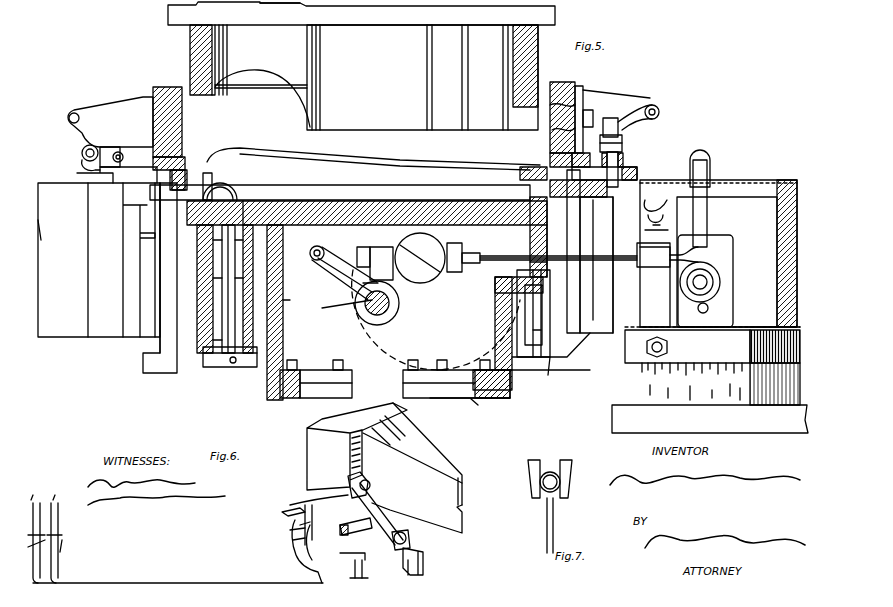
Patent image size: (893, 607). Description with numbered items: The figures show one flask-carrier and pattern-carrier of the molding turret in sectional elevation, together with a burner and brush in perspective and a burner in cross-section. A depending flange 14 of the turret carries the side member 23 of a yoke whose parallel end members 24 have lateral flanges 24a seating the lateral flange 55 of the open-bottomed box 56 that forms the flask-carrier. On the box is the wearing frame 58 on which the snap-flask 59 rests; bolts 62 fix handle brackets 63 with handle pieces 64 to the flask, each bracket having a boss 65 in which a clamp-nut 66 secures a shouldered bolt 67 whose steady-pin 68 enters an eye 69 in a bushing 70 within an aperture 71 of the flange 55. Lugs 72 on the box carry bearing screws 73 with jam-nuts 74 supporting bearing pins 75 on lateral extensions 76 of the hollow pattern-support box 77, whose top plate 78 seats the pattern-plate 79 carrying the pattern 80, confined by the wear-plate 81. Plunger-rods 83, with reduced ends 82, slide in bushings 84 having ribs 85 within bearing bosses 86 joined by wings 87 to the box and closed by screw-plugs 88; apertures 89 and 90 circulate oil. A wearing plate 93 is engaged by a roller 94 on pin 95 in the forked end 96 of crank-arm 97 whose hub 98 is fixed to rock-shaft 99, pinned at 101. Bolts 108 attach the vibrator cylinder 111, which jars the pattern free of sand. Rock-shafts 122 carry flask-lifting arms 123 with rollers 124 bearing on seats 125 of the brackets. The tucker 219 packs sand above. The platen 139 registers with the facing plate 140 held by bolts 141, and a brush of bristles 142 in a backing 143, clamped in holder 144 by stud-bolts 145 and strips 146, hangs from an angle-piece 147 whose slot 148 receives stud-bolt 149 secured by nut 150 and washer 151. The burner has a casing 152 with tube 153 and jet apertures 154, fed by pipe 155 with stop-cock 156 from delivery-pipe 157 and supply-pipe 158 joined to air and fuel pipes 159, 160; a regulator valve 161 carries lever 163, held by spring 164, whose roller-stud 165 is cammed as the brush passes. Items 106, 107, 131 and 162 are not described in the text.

In FIG. 6, the depending flange 14 is at (360, 413).
In FIG. 6, the side member 23 is at (405, 410).
In FIG. 5, the yoke end member 24 is at (135, 303).
In FIG. 6, the yoke end member 24 is at (438, 466).
In FIG. 5, the lateral flange 24a is at (770, 183).
In FIG. 5, the lateral flange 55 is at (90, 178).
In FIG. 5, the flask-carrier box 56 is at (165, 262).
In FIG. 5, the wearing frame 58 is at (185, 150).
In FIG. 5, the snap-flask 59 is at (182, 120).
In FIG. 5, the bolt 62 is at (585, 110).
In FIG. 5, the handle bracket 63 is at (110, 106).
In FIG. 5, the handle piece 64 is at (70, 113).
In FIG. 5, the boss 65 is at (622, 142).
In FIG. 5, the clamp-nut 66 is at (623, 122).
In FIG. 5, the shouldered bolt 67 is at (610, 118).
In FIG. 5, the steady-pin 68 is at (637, 172).
In FIG. 5, the eye 69 is at (590, 160).
In FIG. 5, the bushing 70 is at (618, 160).
In FIG. 5, the aperture 71 is at (620, 210).
In FIG. 5, the lug 72 is at (547, 376).
In FIG. 5, the bearing screw 73 is at (517, 303).
In FIG. 5, the jam-nut 74 is at (520, 345).
In FIG. 5, the bearing pin 75 is at (530, 268).
In FIG. 5, the lateral extension 76 is at (554, 251).
In FIG. 5, the pattern-support box 77 is at (283, 325).
In FIG. 5, the pattern-supporting plate 78 is at (347, 201).
In FIG. 5, the pattern-plate 79 is at (285, 193).
In FIG. 5, the pattern section 80 is at (347, 160).
In FIG. 5, the wear-plate 81 is at (226, 182).
In FIG. 5, the reduced upper end 82 is at (243, 201).
In FIG. 5, the plunger-rod 83 is at (222, 300).
In FIG. 5, the bushing 84 is at (293, 294).
In FIG. 5, the annular bearing rib 85 is at (205, 232).
In FIG. 5, the tubular bearing boss 86 is at (200, 340).
In FIG. 5, the wing 87 is at (185, 378).
In FIG. 5, the screw-plug 88 is at (218, 367).
In FIG. 5, the transverse aperture 89 is at (210, 360).
In FIG. 5, the transverse aperture 90 is at (213, 282).
In FIG. 5, the wearing plate 93 is at (355, 250).
In FIG. 5, the roller 94 is at (340, 273).
In FIG. 5, the transverse pin 95 is at (323, 254).
In FIG. 5, the forked outer end 96 is at (345, 275).
In FIG. 5, the crank-arm 97 is at (359, 286).
In FIG. 5, the hub 98 is at (377, 305).
In FIG. 5, the rock-shaft 99 is at (347, 309).
In FIG. 6, the pin 101 is at (319, 525).
In FIG. 6, the strut 106 is at (369, 514).
In FIG. 6, the curved rod 107 is at (312, 504).
In FIG. 5, the bolt 108 is at (395, 280).
In FIG. 5, the vibrator cylinder 111 is at (420, 258).
In FIG. 5, the rock-shaft 122 is at (82, 150).
In FIG. 5, the flask-lifting arm 123 is at (82, 162).
In FIG. 5, the roller 124 is at (123, 160).
In FIG. 5, the flat seat 125 is at (112, 147).
In FIG. 5, the top plate notch 131 is at (333, 5).
In FIG. 5, the platen 139 is at (710, 419).
In FIG. 5, the facing plate 140 is at (470, 406).
In FIG. 5, the bolt 141 is at (300, 363).
In FIG. 5, the bristles 142 is at (640, 388).
In FIG. 6, the bristles 142 is at (423, 566).
In FIG. 5, the wooden backing 143 is at (765, 325).
In FIG. 5, the channeled holder 144 is at (712, 345).
In FIG. 5, the stud-bolt 145 is at (648, 350).
In FIG. 6, the stud-bolt 145 is at (345, 480).
In FIG. 5, the wearing strip 146 is at (750, 345).
In FIG. 5, the angle-piece 147 is at (733, 250).
In FIG. 5, the slot 148 is at (708, 308).
In FIG. 5, the shouldered stud-bolt 149 is at (690, 286).
In FIG. 6, the shouldered stud-bolt 149 is at (372, 481).
In FIG. 5, the nut 150 is at (710, 250).
In FIG. 5, the washer 151 is at (718, 275).
In FIG. 7, the burner casing 152 is at (572, 470).
In FIG. 7, the burner-tube 153 is at (550, 472).
In FIG. 7, the jet aperture 154 is at (560, 484).
In FIG. 6, the feed pipe 155 is at (371, 577).
In FIG. 7, the feed pipe 155 is at (545, 530).
In FIG. 6, the stop-cock 156 is at (362, 566).
In FIG. 6, the delivery-pipe 157 is at (365, 556).
In FIG. 6, the supply-pipe 158 is at (178, 583).
In FIG. 6, the air-supply pipe 159 is at (55, 555).
In FIG. 6, the fuel-supply pipe 160 is at (60, 571).
In FIG. 6, the regulator valve 161 is at (315, 550).
In FIG. 6, the pin 162 is at (286, 526).
In FIG. 6, the lever 163 is at (290, 530).
In FIG. 6, the spring 164 is at (283, 540).
In FIG. 6, the roller-stud 165 is at (281, 512).
In FIG. 5, the tucker 219 is at (422, 77).